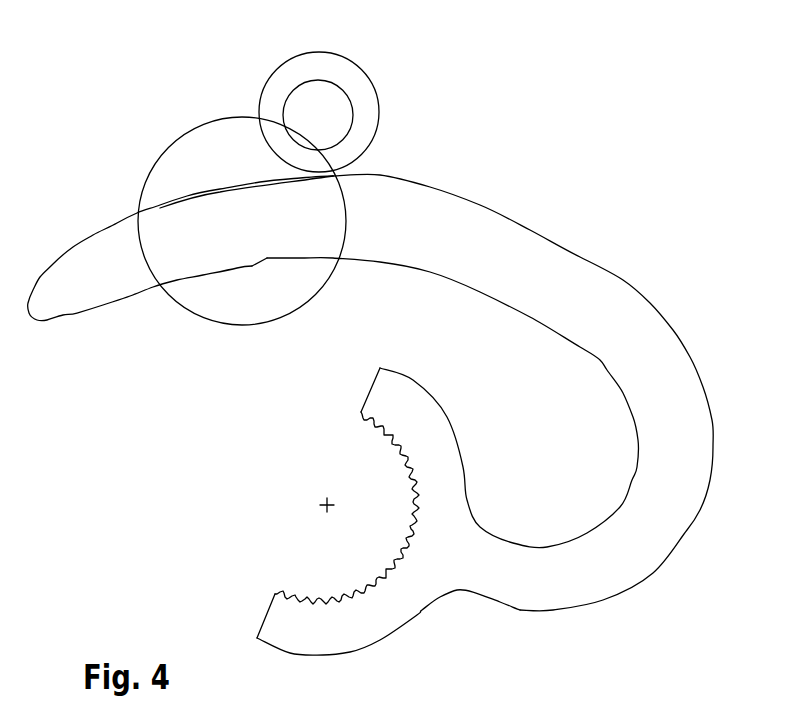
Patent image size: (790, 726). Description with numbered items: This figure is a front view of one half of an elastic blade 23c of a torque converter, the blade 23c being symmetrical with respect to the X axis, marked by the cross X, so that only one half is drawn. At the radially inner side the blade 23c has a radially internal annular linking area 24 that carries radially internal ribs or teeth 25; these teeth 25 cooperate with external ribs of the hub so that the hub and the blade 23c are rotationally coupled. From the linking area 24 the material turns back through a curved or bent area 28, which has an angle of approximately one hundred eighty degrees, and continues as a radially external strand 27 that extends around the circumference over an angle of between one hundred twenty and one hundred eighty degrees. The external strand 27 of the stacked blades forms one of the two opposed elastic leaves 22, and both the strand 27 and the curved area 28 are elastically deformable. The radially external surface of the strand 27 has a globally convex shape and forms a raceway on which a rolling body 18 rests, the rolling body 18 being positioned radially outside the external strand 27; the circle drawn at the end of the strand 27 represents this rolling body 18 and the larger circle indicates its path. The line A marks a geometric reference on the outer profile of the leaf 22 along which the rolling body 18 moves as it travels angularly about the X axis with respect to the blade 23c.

The rolling body 18 is at (353, 88).
The elastic leaf 22 is at (388, 420).
The blade 23c is at (115, 270).
The radially internal annular linking area 24 is at (341, 617).
The radially internal ribs or teeth 25 is at (312, 600).
The radially external strand 27 is at (365, 237).
The curved or bent area 28 is at (635, 358).
The arc A is at (333, 176).
The X axis X is at (322, 501).